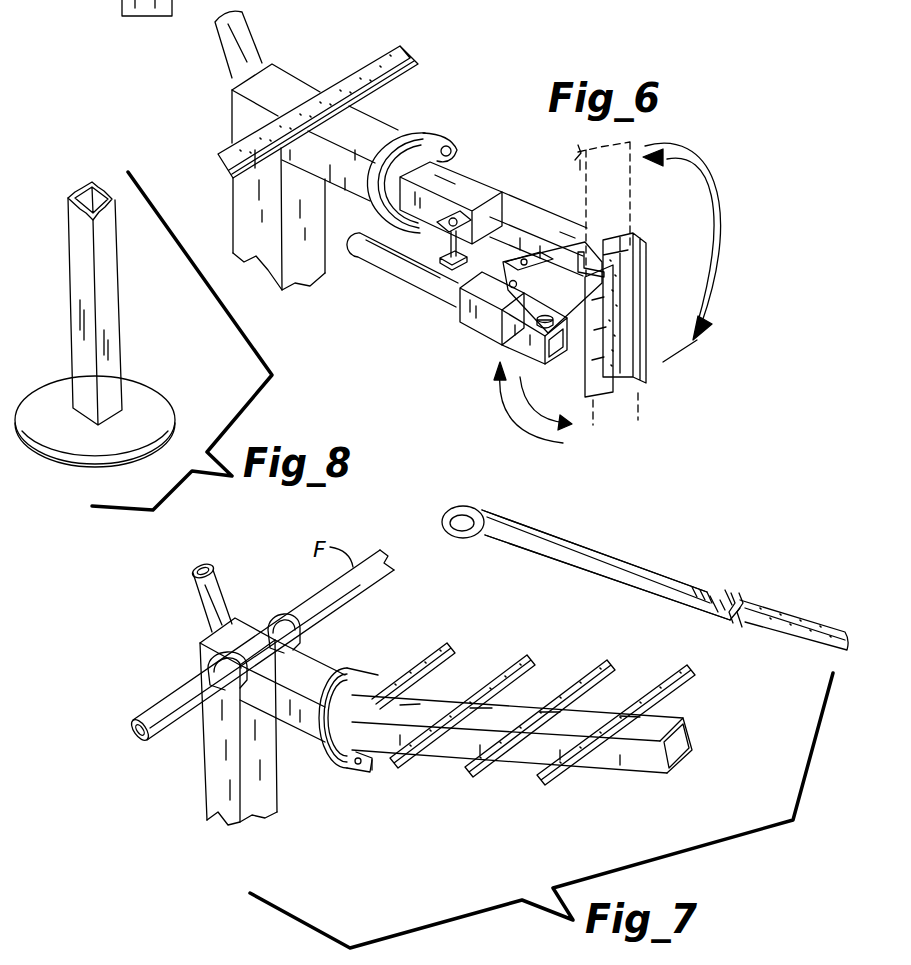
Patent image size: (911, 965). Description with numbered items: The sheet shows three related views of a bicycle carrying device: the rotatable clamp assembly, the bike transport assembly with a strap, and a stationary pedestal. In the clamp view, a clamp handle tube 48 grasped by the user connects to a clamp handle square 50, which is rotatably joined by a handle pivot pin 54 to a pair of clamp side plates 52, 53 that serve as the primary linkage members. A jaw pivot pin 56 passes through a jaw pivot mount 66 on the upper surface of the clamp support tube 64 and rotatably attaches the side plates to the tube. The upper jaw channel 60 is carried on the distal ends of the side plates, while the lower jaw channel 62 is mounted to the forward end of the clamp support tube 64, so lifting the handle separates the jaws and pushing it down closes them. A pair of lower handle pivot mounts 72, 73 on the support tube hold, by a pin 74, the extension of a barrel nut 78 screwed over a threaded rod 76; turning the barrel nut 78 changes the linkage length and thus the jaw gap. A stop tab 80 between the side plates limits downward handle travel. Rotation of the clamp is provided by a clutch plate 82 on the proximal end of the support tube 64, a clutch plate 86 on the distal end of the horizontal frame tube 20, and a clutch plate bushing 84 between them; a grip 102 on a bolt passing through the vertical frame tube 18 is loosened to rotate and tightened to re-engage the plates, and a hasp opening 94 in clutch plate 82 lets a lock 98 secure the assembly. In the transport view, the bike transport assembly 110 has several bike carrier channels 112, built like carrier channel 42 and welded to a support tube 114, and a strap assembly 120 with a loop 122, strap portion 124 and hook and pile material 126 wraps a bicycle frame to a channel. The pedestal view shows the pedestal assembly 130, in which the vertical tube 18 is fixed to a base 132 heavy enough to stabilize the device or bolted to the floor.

In FIG. 6, the vertical frame tube 18 is at (246, 207).
In FIG. 8, the vertical frame tube 18 is at (110, 234).
In FIG. 7, the vertical frame tube 18 is at (220, 793).
In FIG. 6, the horizontal frame tube 20 is at (393, 128).
In FIG. 7, the horizontal frame tube 20 is at (267, 700).
In FIG. 6, the carrier channel 42 is at (413, 46).
In FIG. 7, the carrier channel 42 is at (219, 705).
In FIG. 6, the clamp handle tube 48 is at (443, 302).
In FIG. 6, the clamp handle square 50 is at (507, 337).
In FIG. 6, the clamp side plate 52 is at (575, 366).
In FIG. 6, the clamp side plate 53 is at (604, 270).
In FIG. 6, the handle pivot pin 54 is at (553, 319).
In FIG. 6, the jaw pivot pin 56 is at (512, 265).
In FIG. 6, the upper jaw channel 60 is at (600, 385).
In FIG. 6, the lower jaw channel 62 is at (642, 380).
In FIG. 6, the clamp support tube 64 is at (462, 187).
In FIG. 6, the jaw pivot mount 66 is at (578, 242).
In FIG. 6, the lower handle pivot mount 72 is at (443, 264).
In FIG. 6, the lower handle pivot mount 73 is at (458, 220).
In FIG. 6, the pin 74 is at (470, 226).
In FIG. 6, the threaded rod 76 is at (503, 275).
In FIG. 6, the barrel nut 78 is at (526, 258).
In FIG. 6, the stop tab 80 is at (516, 286).
In FIG. 6, the clutch plate 82 is at (459, 150).
In FIG. 7, the clutch plate 82 is at (364, 768).
In FIG. 6, the clutch plate bushing 84 is at (366, 182).
In FIG. 7, the clutch plate bushing 84 is at (326, 713).
In FIG. 6, the clutch plate 86 is at (390, 146).
In FIG. 7, the clutch plate 86 is at (347, 782).
In FIG. 6, the hasp opening 94 is at (449, 146).
In FIG. 7, the hasp opening 94 is at (357, 765).
In FIG. 6, the lock 98 is at (356, 282).
In FIG. 6, the grip 102 is at (257, 50).
In FIG. 7, the grip 102 is at (214, 597).
In FIG. 7, the bike transport assembly 110 is at (483, 799).
In FIG. 7, the bike carrier channel 112 is at (507, 666).
In FIG. 7, the support tube 114 is at (637, 760).
In FIG. 7, the strap assembly 120 is at (578, 546).
In FIG. 7, the loop 122 is at (458, 506).
In FIG. 7, the strap portion 124 is at (210, 660).
In FIG. 7, the hook and pile material 126 is at (301, 632).
In FIG. 8, the pedestal assembly 130 is at (148, 347).
In FIG. 8, the base 132 is at (156, 390).